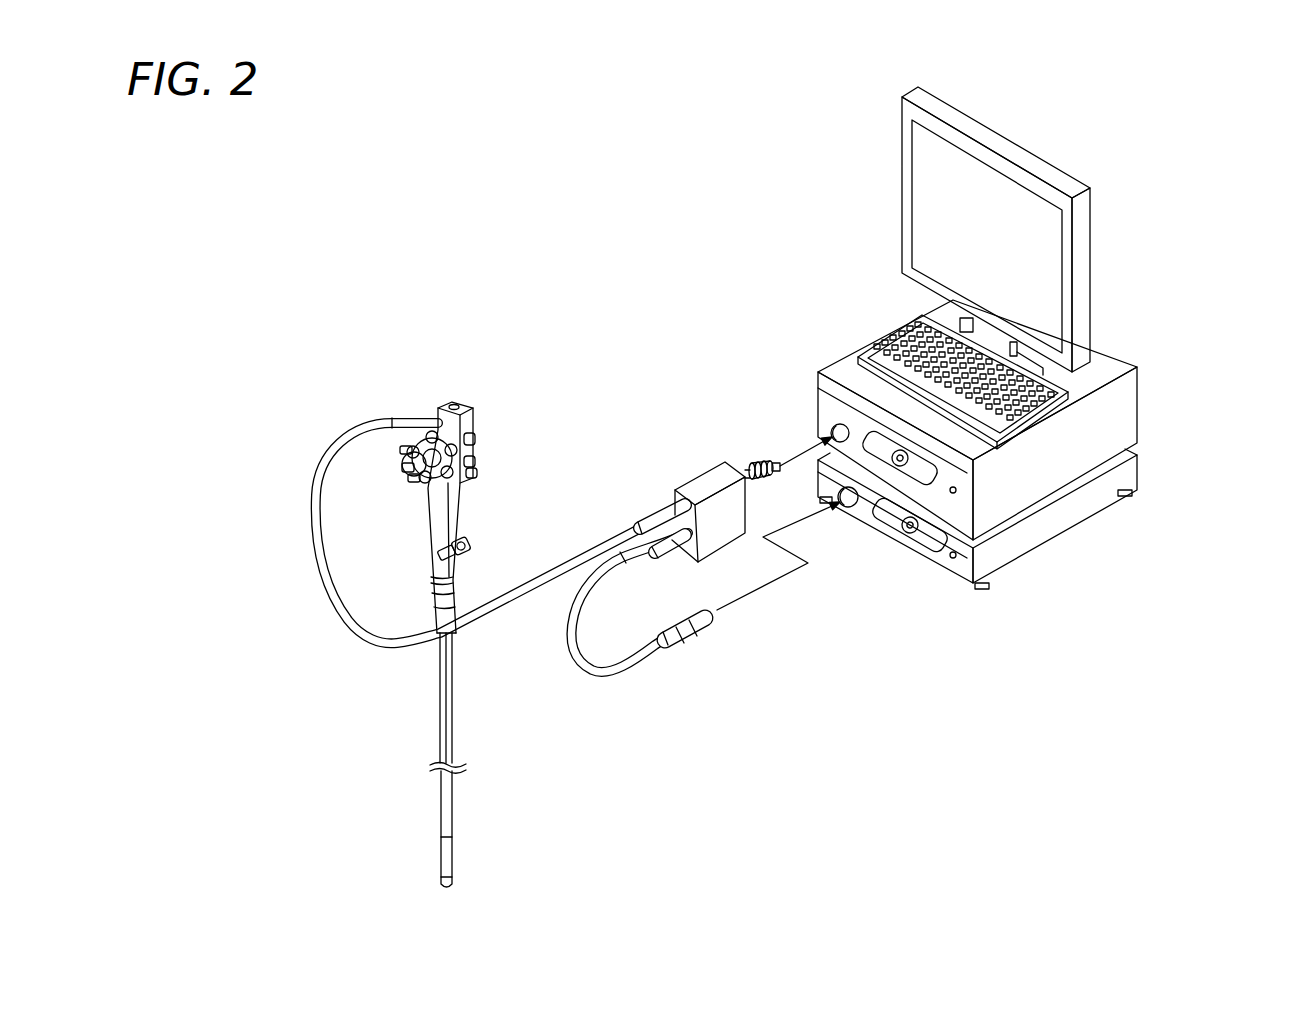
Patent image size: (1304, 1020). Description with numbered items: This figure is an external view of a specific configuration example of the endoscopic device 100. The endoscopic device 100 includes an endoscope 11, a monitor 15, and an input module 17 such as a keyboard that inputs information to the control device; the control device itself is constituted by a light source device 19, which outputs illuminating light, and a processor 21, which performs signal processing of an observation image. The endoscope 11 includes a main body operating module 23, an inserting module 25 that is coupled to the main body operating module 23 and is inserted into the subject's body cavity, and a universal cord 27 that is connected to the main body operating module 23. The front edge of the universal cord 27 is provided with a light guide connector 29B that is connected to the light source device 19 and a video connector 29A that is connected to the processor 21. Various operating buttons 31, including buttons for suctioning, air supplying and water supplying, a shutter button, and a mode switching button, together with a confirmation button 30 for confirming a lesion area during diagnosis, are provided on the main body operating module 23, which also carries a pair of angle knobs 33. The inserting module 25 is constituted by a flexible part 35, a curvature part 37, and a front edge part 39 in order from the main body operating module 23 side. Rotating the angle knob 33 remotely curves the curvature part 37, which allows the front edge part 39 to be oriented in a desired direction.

The endoscopic device 100 is at (531, 218).
The endoscope 11 is at (590, 382).
The monitor 15 is at (900, 119).
The input module 17 is at (897, 320).
The light source device 19 is at (1117, 480).
The processor 21 is at (1118, 410).
The main body operating module 23 is at (430, 394).
The inserting module 25 is at (476, 738).
The universal cord 27 is at (322, 583).
The video connector 29A is at (717, 463).
The light guide (LG) connector 29B is at (703, 633).
The confirmation button 30 is at (453, 397).
The operating buttons 31 is at (491, 441).
The angle knobs 33 is at (413, 457).
The flexible part 35 is at (443, 670).
The curvature part 37 is at (453, 847).
The front edge part 39 is at (453, 883).